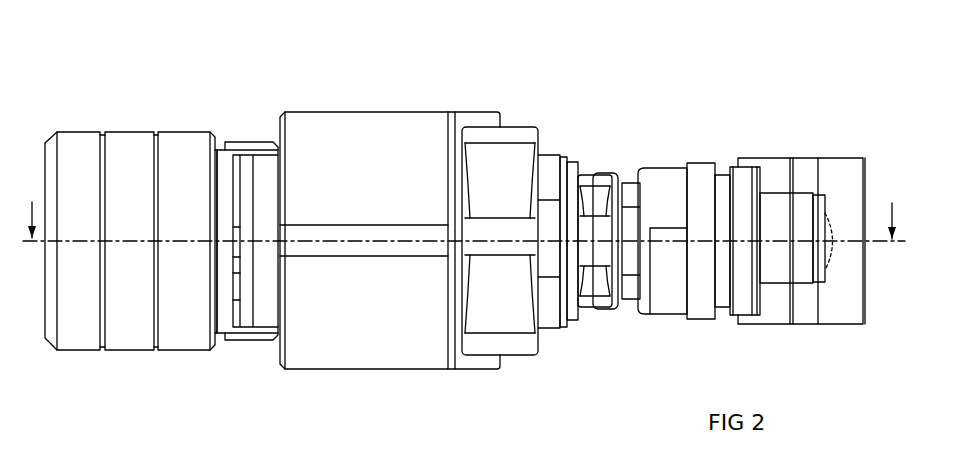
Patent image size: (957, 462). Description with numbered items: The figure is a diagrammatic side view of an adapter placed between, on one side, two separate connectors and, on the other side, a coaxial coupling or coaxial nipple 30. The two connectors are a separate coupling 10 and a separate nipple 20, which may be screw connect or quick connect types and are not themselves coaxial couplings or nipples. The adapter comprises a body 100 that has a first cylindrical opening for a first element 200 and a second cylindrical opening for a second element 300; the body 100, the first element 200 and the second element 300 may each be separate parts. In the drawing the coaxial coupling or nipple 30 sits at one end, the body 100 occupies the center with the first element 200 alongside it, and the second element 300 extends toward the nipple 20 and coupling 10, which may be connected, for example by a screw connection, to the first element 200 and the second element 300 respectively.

The separate coupling 10 is at (792, 155).
The separate nipple 20 is at (700, 155).
The coaxial coupling or coaxial nipple 30 is at (118, 123).
The body 100 is at (360, 132).
The first element 200 is at (243, 147).
The second element 300 is at (507, 155).